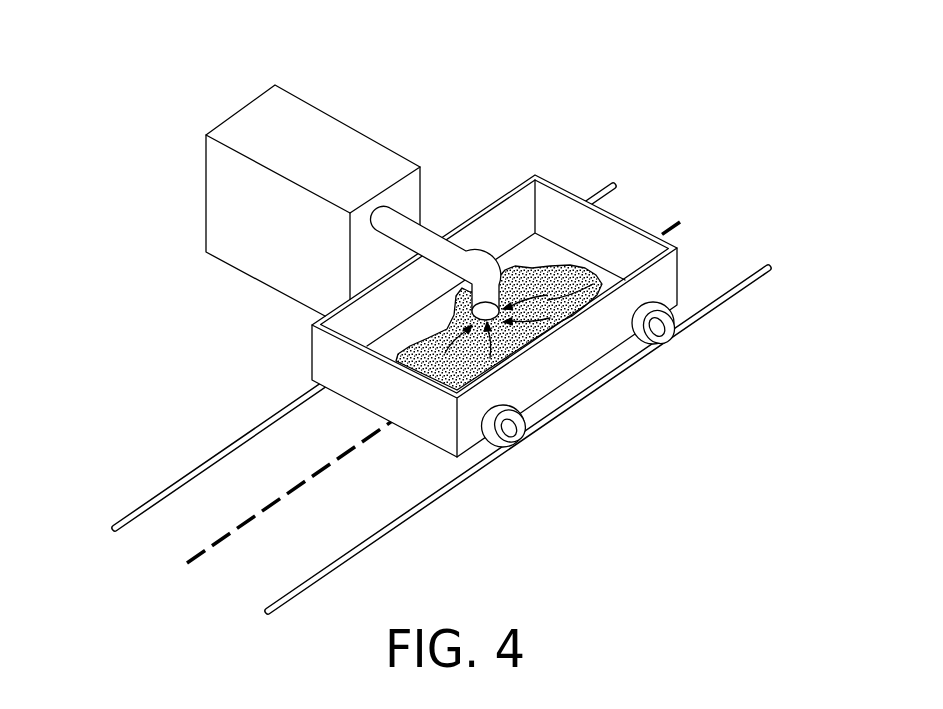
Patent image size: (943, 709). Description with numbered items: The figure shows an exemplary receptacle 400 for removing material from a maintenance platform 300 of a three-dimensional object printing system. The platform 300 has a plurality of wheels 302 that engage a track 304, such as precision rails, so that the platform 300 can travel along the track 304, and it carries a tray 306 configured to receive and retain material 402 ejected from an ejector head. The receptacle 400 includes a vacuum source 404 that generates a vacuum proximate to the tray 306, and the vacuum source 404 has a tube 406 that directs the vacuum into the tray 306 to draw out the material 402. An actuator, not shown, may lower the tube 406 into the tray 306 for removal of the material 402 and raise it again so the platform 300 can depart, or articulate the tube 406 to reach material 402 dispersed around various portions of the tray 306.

The maintenance platform 300 is at (443, 369).
The wheels 302 is at (657, 339).
The track 304 is at (226, 448).
The tray 306 is at (598, 244).
The receptacle 400 is at (226, 271).
The material 402 is at (581, 288).
The vacuum source 404 is at (310, 199).
The tube 406 is at (426, 232).